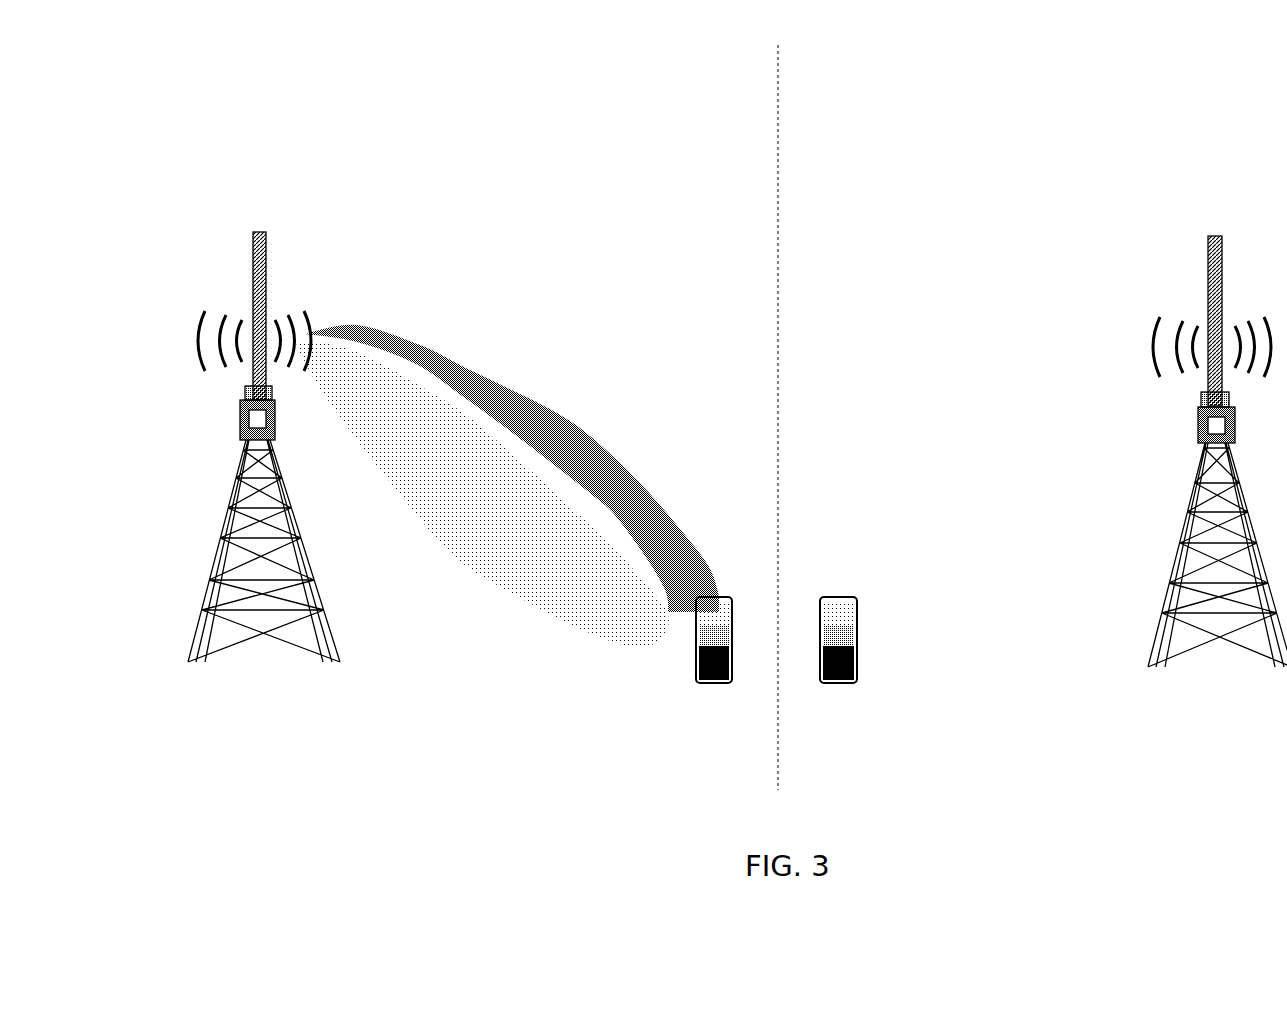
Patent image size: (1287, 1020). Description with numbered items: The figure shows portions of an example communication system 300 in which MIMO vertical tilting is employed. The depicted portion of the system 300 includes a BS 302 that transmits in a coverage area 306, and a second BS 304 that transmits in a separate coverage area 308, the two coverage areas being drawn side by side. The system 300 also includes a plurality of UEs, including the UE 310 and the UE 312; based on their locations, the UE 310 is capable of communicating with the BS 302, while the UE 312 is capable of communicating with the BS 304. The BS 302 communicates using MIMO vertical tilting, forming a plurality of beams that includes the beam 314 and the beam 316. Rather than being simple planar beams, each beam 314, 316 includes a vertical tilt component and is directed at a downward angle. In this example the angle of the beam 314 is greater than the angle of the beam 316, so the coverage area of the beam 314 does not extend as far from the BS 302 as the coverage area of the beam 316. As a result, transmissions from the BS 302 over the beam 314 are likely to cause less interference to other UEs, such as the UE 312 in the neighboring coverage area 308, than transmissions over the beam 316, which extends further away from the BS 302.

The communication system 300 is at (280, 47).
The BS 302 is at (245, 665).
The BS 304 is at (1205, 667).
The coverage area 306 is at (462, 99).
The coverage area 308 is at (1112, 102).
The UE 310 is at (718, 684).
The UE 312 is at (843, 597).
The beam 314 is at (461, 558).
The beam 316 is at (633, 474).